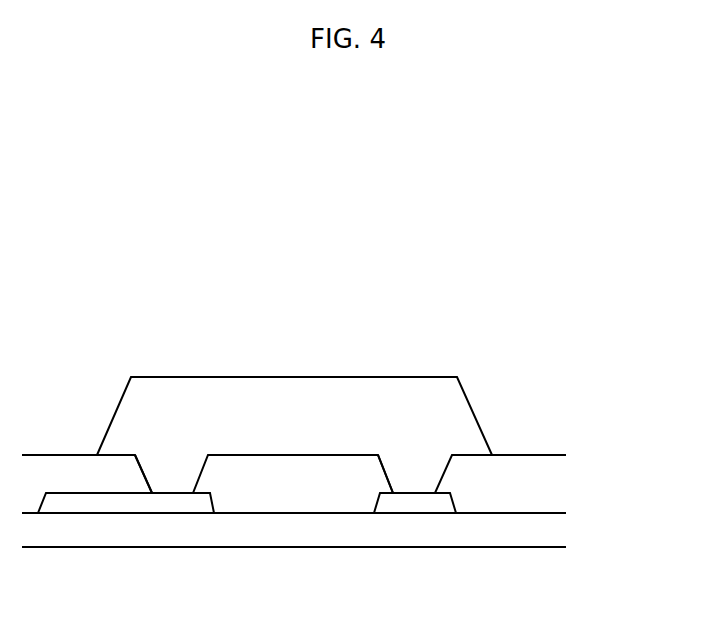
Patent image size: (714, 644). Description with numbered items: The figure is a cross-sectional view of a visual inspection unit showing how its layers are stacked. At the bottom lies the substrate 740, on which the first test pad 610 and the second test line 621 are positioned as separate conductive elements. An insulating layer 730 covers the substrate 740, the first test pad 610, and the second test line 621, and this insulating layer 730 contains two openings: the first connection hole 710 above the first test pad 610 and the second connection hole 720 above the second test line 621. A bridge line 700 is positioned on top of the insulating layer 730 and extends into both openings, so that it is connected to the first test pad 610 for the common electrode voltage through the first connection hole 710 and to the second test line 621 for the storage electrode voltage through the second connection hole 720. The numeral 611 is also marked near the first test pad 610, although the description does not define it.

The bridge line 700 is at (467, 422).
The first connection hole 710 is at (145, 472).
The second connection hole 720 is at (388, 470).
The insulating layer 730 is at (543, 488).
The substrate 740 is at (543, 537).
The first test pad 610 is at (182, 503).
The upper surface of first lower electrode 611 is at (68, 503).
The second test line 621 is at (414, 505).